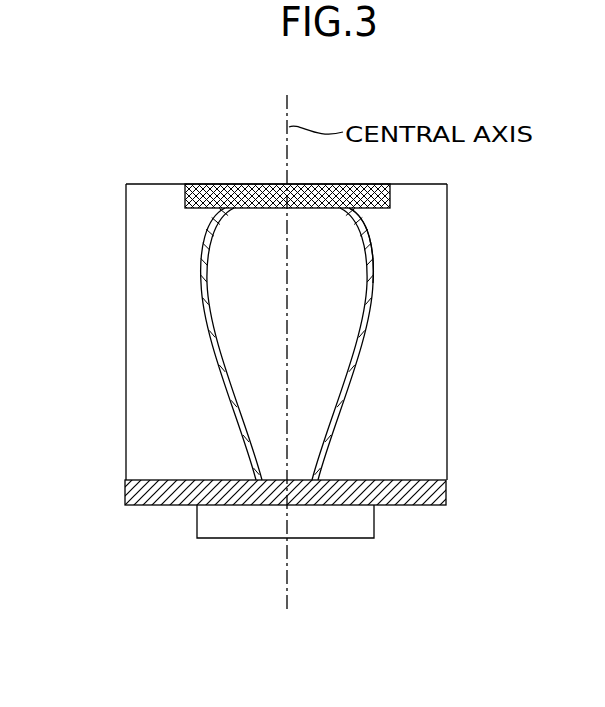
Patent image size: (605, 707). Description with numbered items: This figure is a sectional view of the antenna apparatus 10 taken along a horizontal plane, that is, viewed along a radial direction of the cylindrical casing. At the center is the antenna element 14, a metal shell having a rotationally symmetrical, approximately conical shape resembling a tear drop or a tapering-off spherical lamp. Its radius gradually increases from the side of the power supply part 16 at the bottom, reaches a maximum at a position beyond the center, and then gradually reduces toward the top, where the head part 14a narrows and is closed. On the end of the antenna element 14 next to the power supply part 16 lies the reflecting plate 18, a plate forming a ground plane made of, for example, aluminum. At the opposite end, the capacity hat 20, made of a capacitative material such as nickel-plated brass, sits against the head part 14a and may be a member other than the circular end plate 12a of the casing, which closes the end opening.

The antenna apparatus 10 is at (86, 276).
The end plate 12a is at (150, 184).
The antenna element 14 is at (372, 342).
The head part 14a is at (368, 245).
The power supply part 16 is at (236, 538).
The reflecting plate 18 is at (447, 490).
The capacity hat 20 is at (357, 184).